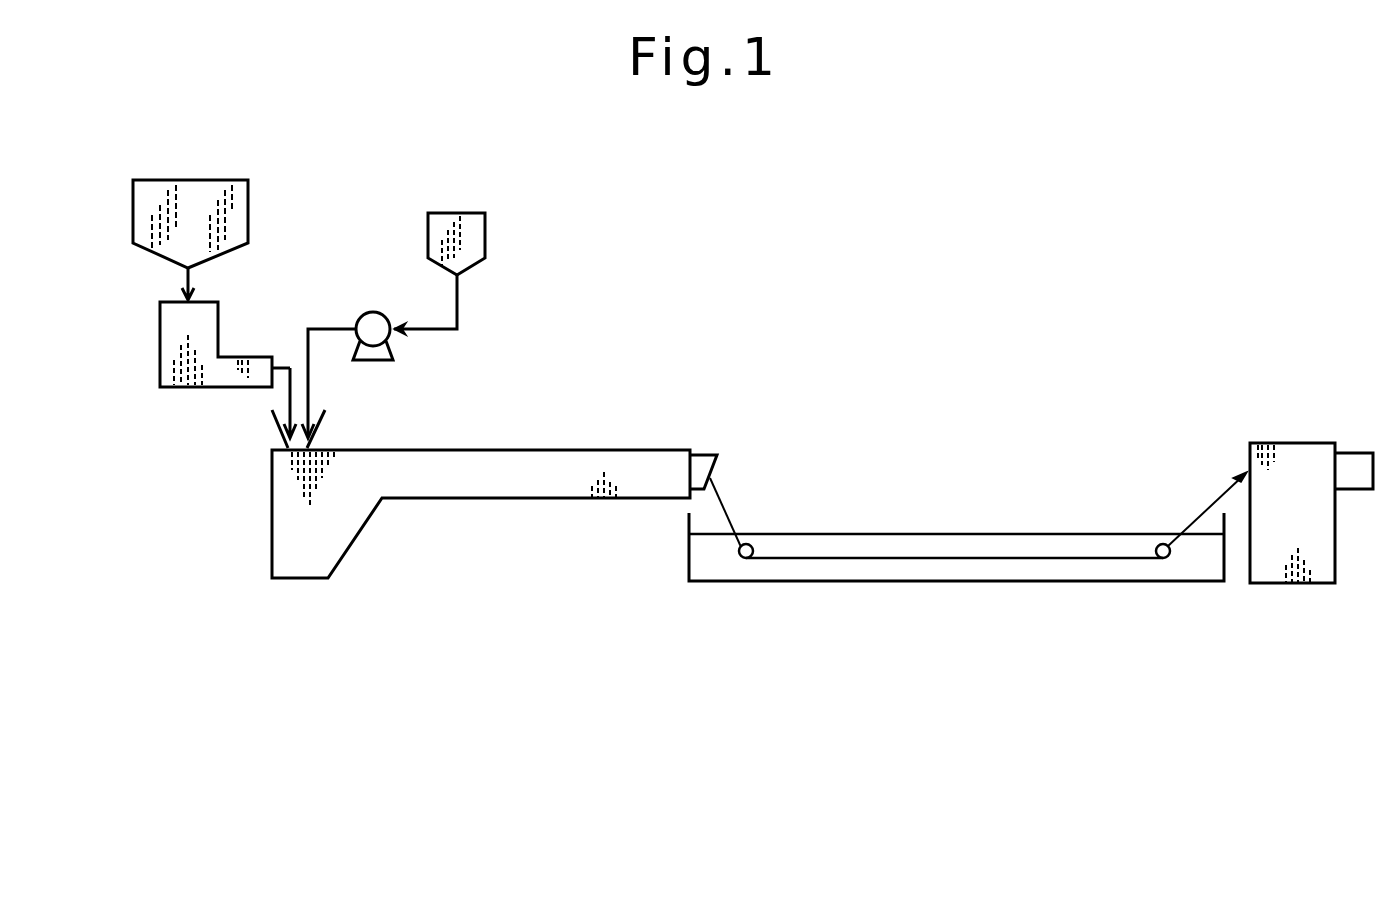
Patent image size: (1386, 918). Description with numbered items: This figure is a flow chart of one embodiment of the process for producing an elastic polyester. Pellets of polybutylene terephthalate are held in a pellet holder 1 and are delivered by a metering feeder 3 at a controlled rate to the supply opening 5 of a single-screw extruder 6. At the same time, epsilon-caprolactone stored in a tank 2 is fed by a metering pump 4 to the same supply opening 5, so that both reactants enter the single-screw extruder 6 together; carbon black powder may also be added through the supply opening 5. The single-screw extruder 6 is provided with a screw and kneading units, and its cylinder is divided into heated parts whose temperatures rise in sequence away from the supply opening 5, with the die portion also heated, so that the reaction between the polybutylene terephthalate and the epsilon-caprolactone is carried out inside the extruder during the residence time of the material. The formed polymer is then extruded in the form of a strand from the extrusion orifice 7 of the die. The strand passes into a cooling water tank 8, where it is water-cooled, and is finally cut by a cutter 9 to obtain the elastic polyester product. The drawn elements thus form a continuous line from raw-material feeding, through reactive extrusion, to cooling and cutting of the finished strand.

The pellet holder 1 is at (214, 190).
The tank 2 is at (475, 222).
The metering feeder 3 is at (161, 347).
The metering pump 4 is at (376, 322).
The supply opening 5 is at (310, 418).
The single-screw extruder 6 is at (348, 532).
The extrusion orifice 7 is at (717, 466).
The cooling water tank 8 is at (906, 584).
The cutter 9 is at (1297, 450).